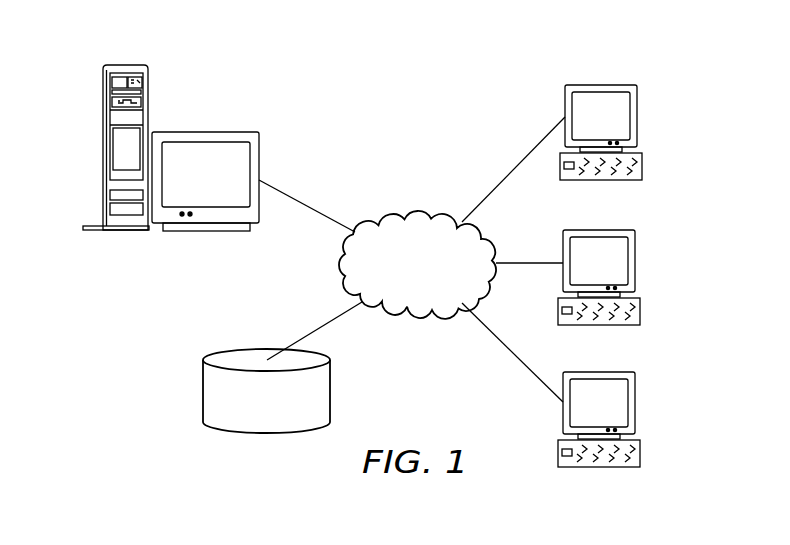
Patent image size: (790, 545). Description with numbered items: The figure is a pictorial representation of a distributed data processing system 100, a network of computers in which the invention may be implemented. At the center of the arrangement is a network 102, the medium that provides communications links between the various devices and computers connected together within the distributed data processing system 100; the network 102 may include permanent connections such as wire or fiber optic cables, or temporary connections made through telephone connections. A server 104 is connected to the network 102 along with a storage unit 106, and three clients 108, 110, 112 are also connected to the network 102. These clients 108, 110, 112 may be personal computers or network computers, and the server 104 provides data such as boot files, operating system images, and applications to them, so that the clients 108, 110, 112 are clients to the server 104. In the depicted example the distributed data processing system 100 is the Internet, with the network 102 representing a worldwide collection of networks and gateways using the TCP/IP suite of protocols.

The distributed data processing system 100 is at (343, 96).
The network 102 is at (390, 215).
The server 104 is at (103, 148).
The storage unit 106 is at (203, 392).
The client 108 is at (638, 117).
The client 110 is at (636, 263).
The client 112 is at (636, 405).